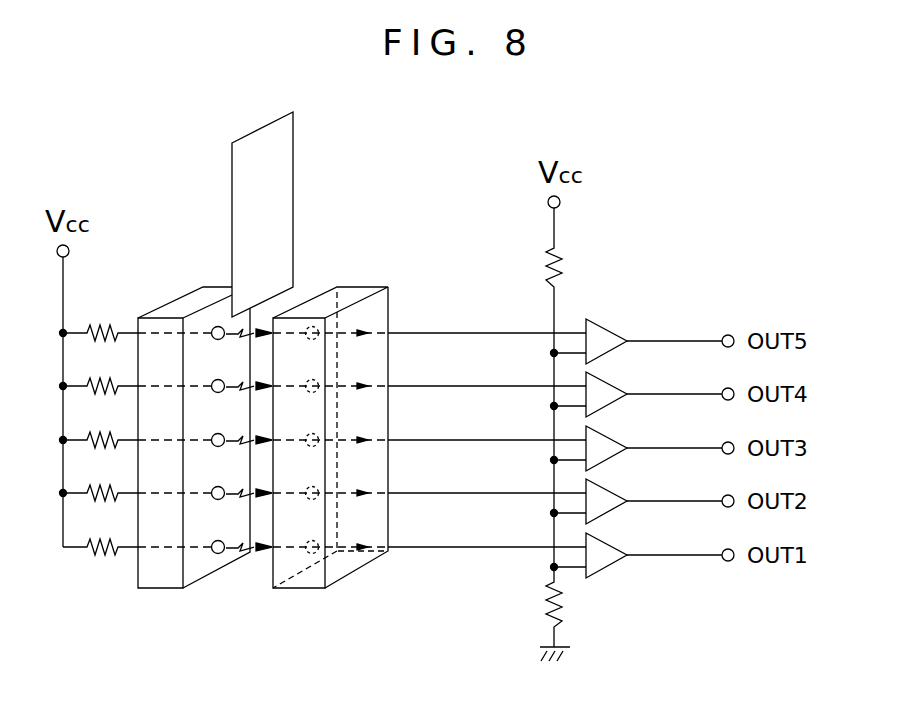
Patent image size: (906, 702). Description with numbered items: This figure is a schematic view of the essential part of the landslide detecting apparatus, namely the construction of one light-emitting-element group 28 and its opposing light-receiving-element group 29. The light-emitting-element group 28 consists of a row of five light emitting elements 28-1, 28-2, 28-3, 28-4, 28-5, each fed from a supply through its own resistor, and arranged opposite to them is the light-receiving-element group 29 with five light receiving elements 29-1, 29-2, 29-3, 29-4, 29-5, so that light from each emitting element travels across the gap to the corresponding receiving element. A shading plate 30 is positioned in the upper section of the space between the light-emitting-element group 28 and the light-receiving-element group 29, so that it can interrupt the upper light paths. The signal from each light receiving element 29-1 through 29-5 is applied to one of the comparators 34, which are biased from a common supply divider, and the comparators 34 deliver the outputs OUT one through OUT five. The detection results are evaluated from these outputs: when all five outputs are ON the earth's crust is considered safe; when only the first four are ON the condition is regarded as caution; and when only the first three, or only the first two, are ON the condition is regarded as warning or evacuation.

The light-emitting-element group 28 is at (192, 305).
The light emitting element 28-1 is at (218, 554).
The light emitting element 28-2 is at (212, 510).
The light emitting element 28-3 is at (212, 457).
The light emitting element 28-4 is at (212, 403).
The light emitting element 28-5 is at (212, 350).
The light-receiving-element group 29 is at (378, 305).
The light receiving element 29-1 is at (313, 556).
The light receiving element 29-2 is at (293, 510).
The light receiving element 29-3 is at (293, 457).
The light receiving element 29-4 is at (293, 403).
The light receiving element 29-5 is at (293, 350).
The shading plate 30 is at (285, 162).
The comparator 34 is at (608, 340).